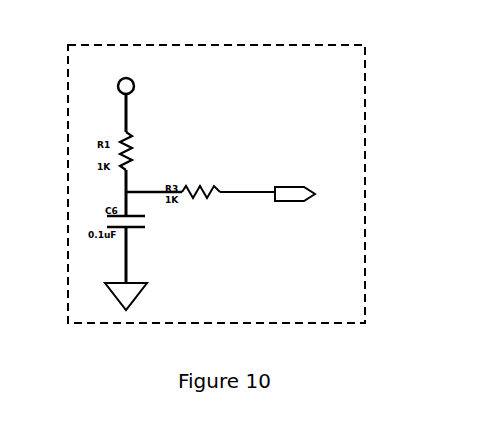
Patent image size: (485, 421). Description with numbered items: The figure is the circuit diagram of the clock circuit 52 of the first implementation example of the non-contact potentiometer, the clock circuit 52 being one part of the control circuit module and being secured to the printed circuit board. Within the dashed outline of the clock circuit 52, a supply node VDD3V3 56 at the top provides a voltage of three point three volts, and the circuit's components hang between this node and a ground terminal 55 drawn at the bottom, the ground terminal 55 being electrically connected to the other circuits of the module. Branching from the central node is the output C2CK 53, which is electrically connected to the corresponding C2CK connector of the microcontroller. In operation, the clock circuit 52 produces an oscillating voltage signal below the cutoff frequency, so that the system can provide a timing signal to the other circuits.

The clock circuit 52 is at (233, 45).
The output C2CK 53 is at (290, 187).
The ground terminal 55 is at (135, 297).
The VDD3V3 56 is at (135, 92).